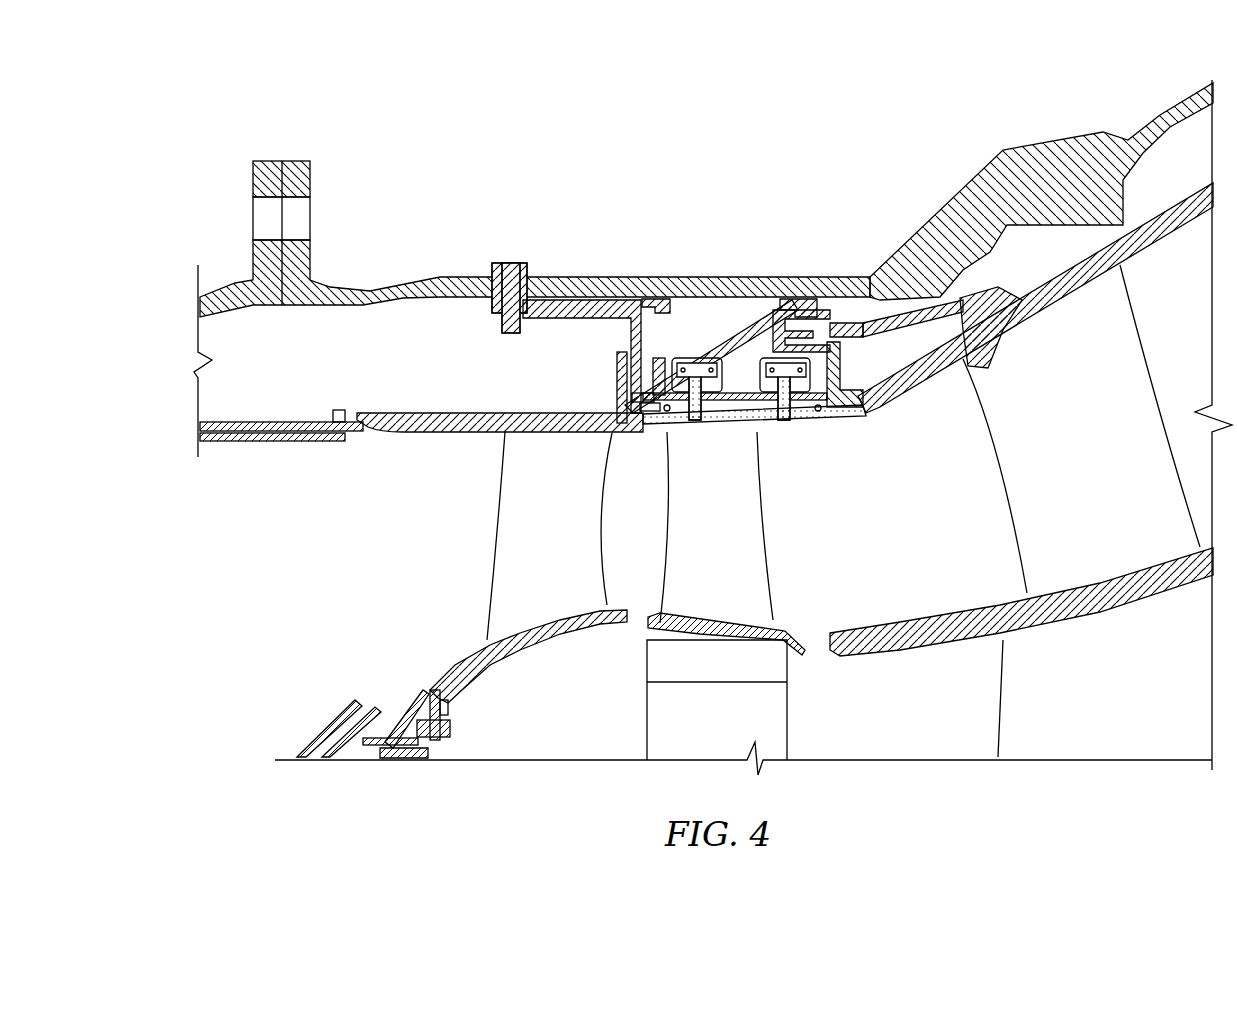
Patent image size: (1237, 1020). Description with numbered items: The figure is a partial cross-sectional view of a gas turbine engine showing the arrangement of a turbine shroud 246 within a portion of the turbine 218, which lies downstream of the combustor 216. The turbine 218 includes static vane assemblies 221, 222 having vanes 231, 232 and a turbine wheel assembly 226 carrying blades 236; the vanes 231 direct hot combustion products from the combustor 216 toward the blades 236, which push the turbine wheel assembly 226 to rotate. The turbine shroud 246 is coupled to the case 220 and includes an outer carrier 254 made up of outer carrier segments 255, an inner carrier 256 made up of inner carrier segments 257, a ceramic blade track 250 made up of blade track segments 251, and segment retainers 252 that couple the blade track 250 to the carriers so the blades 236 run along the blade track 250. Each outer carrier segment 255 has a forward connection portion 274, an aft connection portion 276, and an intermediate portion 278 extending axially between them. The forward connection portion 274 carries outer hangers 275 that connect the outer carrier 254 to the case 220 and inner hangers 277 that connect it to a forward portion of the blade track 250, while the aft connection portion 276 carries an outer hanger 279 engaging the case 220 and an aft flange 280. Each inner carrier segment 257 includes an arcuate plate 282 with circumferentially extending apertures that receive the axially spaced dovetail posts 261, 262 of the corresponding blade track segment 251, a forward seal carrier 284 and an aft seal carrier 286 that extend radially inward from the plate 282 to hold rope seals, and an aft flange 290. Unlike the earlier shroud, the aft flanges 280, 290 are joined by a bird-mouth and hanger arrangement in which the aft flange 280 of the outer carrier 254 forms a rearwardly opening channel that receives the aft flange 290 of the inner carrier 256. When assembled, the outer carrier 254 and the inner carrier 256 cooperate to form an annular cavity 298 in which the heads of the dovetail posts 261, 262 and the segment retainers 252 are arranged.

The turbine 218 is at (397, 108).
The case 220 is at (551, 276).
The forward connection portion 274 is at (611, 297).
The outer hangers 275 is at (656, 296).
The intermediate portion 278 is at (691, 331).
The annular cavity 298 is at (767, 334).
The aft connection portion 276 is at (789, 298).
The outer hanger 279 is at (821, 309).
The turbine shroud 246 is at (859, 312).
The aft flange 280 is at (836, 318).
The segment retainers 252 is at (700, 357).
The arcuate plate 282 is at (664, 382).
The dovetail post 261 is at (706, 371).
The aft flange 290 is at (866, 328).
The outer carrier 254 is at (630, 321).
The outer carrier segments 255 is at (628, 345).
The inner carrier 256 is at (638, 397).
The combustor 216 is at (283, 424).
The inner hangers 277 is at (631, 432).
The inner carrier segments 257 is at (640, 419).
The forward seal carrier 284 is at (691, 421).
The dovetail post 262 is at (741, 417).
The aft seal carrier 286 is at (783, 421).
The blade track 250 is at (806, 422).
The blade track segment 251 is at (827, 428).
The vanes 231 is at (520, 510).
The vanes 232 is at (1026, 483).
The blades 236 is at (745, 565).
The vane assembly 222 is at (1005, 582).
The vane assembly 221 is at (470, 624).
The turbine wheel assembly 226 is at (808, 625).